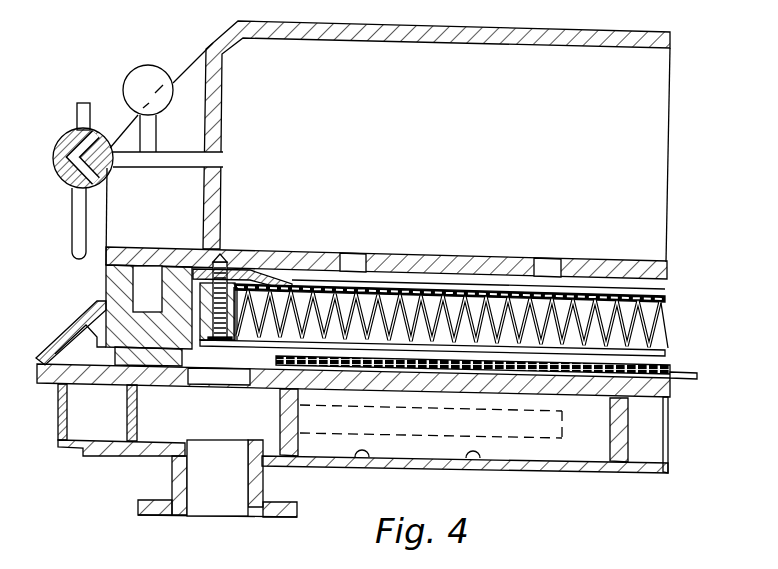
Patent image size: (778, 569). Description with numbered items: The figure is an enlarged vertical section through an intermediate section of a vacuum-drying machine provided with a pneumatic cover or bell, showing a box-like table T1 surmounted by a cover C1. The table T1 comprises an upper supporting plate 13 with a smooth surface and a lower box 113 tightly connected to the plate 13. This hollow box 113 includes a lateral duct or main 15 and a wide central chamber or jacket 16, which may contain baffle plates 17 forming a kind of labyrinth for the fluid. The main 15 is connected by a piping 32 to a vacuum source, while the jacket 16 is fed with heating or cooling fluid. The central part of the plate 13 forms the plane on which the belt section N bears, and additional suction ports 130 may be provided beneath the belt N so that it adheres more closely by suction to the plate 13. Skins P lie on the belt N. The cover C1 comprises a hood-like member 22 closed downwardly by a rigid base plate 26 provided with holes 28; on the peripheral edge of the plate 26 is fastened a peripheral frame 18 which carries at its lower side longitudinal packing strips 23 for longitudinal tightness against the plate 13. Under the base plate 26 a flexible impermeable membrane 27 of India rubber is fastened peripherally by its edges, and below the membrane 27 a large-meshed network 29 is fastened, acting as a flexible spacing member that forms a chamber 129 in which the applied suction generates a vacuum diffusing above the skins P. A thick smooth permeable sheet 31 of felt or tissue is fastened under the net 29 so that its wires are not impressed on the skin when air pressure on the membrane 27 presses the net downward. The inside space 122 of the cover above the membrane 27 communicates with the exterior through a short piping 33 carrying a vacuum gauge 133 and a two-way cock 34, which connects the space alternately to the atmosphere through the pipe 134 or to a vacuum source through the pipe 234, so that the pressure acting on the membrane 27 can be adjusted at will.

The hood-like member 22 is at (580, 40).
The inside space 122 is at (379, 125).
The cover C1 is at (208, 38).
The short piping 33 is at (183, 160).
The vacuum gauge 133 is at (133, 80).
The pipe 134 is at (77, 116).
The two-way cock 34 is at (50, 156).
The pipe 234 is at (75, 220).
The base plate 26 is at (440, 268).
The holes 28 is at (353, 270).
The peripheral frame 18 is at (106, 325).
The membrane 27 is at (290, 286).
The chamber 129 is at (488, 305).
The large-meshed network 29 is at (605, 318).
The sheet 31 is at (661, 348).
The additional suction ports 130 is at (505, 385).
The skins P is at (682, 372).
The central chamber or jacket 16 is at (465, 431).
The belt section N is at (668, 396).
The upper supporting plate 13 is at (651, 400).
The baffle plates 17 is at (480, 458).
The lower box 113 is at (369, 457).
The table T1 is at (576, 474).
The longitudinal packing strips 23 is at (112, 383).
The pipings 32 is at (168, 488).
The lateral ducts or mains 15 is at (177, 420).